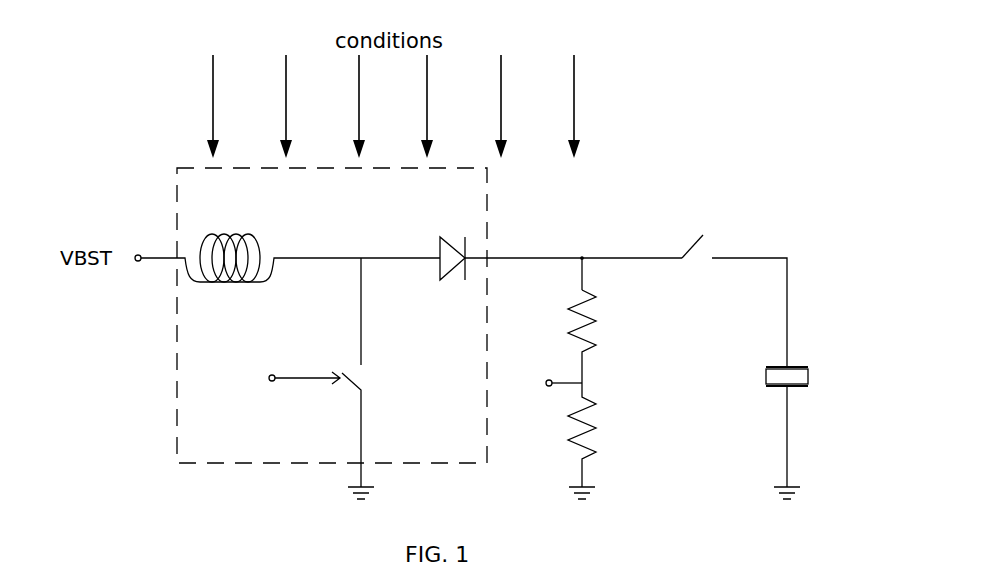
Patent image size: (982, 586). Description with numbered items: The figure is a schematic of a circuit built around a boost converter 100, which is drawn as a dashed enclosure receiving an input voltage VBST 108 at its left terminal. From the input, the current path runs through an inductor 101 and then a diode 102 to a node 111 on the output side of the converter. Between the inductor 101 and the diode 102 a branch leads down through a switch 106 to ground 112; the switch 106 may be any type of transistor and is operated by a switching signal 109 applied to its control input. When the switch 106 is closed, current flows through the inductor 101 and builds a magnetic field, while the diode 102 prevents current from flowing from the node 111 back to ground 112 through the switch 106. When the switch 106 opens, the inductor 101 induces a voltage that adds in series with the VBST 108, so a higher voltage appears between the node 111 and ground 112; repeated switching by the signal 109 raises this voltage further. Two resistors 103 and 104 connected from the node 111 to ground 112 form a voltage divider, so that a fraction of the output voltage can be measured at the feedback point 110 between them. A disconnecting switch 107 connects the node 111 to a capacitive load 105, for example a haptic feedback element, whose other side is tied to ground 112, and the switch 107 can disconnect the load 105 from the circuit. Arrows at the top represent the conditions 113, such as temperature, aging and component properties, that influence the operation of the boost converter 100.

The boost converter 100 is at (177, 418).
The inductor 101 is at (228, 236).
The diode 102 is at (440, 238).
The resistor 103 is at (600, 328).
The resistor 104 is at (600, 432).
The capacitive load 105 is at (808, 376).
The switch 106 is at (364, 385).
The disconnecting switch 107 is at (694, 238).
The input voltage VBST 108 is at (139, 262).
The switching signal 109 is at (269, 379).
The feedback point 110 is at (546, 382).
The node 111 is at (582, 258).
The ground 112 is at (348, 492).
The conditions 113 is at (212, 88).